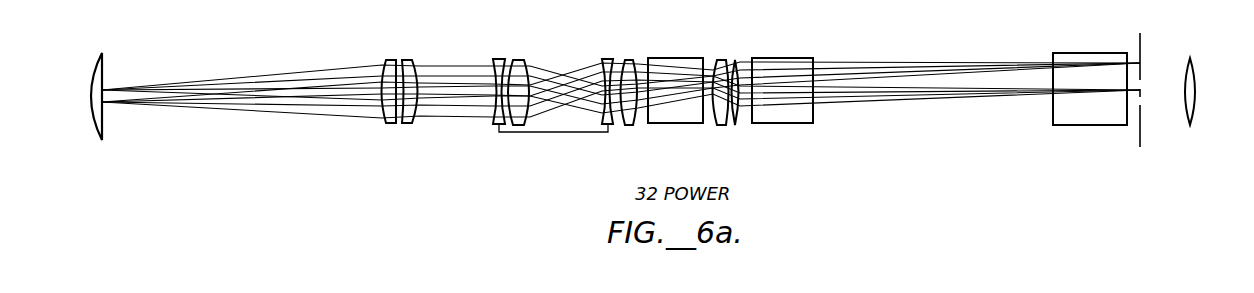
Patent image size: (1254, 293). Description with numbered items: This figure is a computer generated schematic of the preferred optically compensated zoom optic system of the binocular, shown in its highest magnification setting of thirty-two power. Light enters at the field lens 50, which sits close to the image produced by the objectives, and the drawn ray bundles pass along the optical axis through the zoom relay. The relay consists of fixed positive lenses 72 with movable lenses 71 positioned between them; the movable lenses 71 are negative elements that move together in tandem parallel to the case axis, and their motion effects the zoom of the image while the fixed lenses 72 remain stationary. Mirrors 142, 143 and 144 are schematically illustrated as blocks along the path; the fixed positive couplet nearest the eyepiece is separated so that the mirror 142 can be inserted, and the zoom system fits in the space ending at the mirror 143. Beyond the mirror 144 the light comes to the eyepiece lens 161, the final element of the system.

The field lens 50 is at (95, 85).
The movable lenses 71 is at (553, 132).
The fixed lenses 72 is at (519, 60).
The mirror 142 is at (656, 123).
The mirror 143 is at (782, 123).
The mirror 144 is at (1080, 125).
The eyepiece lens 161 is at (1196, 108).